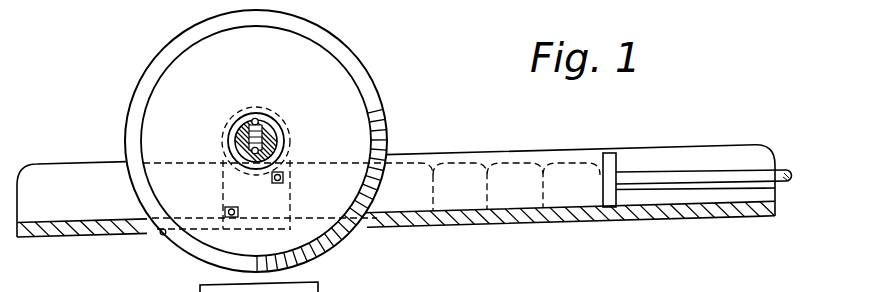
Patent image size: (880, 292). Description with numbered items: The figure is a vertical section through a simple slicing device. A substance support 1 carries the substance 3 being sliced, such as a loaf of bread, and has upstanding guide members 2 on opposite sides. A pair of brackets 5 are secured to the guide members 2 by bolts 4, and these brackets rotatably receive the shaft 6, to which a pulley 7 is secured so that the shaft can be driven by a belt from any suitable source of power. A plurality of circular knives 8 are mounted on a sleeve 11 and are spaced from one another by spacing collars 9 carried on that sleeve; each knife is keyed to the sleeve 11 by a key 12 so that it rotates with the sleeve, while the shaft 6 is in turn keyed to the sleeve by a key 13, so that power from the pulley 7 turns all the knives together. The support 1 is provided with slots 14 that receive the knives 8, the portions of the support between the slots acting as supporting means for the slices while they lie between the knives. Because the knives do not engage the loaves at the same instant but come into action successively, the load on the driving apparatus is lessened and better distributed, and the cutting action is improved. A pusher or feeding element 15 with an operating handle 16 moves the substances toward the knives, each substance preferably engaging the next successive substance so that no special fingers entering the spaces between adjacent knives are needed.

The substance support 1 is at (588, 218).
The guide members 2 is at (681, 155).
The substance 3 is at (552, 172).
The bolts 4 is at (285, 177).
The brackets 5 is at (291, 211).
The shaft 6 is at (271, 134).
The pulley 7 is at (200, 290).
The circular knives 8 is at (372, 106).
The spacing collars 9 is at (262, 137).
The sleeve 11 is at (252, 130).
The key 12 is at (256, 119).
The key 13 is at (255, 153).
The slots 14 is at (162, 234).
The pusher or feeding element 15 is at (611, 153).
The operating handle 16 is at (742, 177).